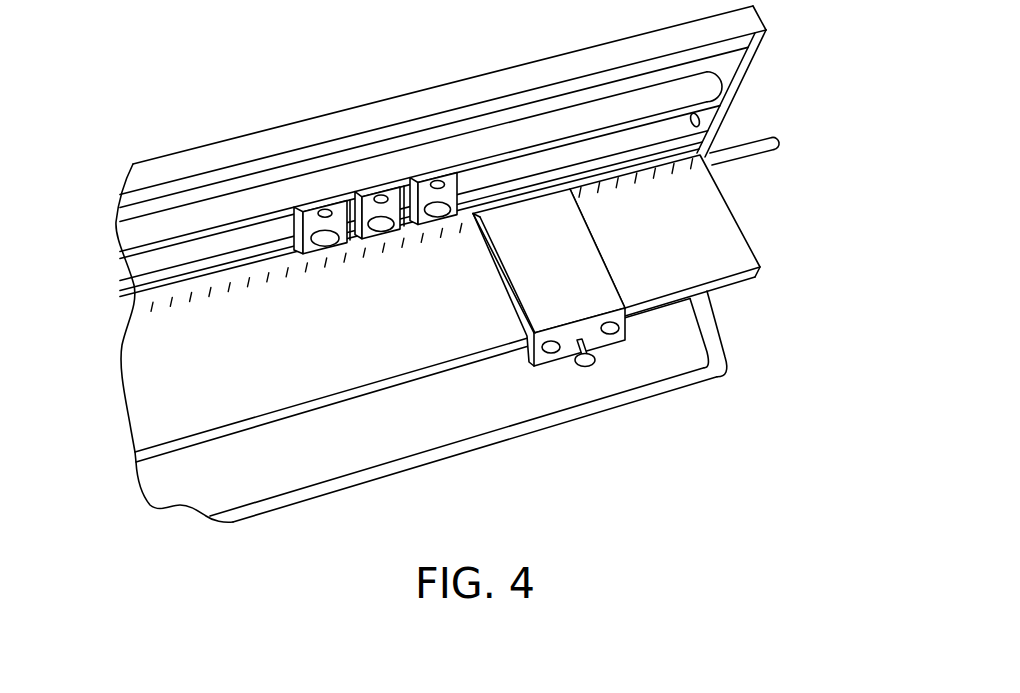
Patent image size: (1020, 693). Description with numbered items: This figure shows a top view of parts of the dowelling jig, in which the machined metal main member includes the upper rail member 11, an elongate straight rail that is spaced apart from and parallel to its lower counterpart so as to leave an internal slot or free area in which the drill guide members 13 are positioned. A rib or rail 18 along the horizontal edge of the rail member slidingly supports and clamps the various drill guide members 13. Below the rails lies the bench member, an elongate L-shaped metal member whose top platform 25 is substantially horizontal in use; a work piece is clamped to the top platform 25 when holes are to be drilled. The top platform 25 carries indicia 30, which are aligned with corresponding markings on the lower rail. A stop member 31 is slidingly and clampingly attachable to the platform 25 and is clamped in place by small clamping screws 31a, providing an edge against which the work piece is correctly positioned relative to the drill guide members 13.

The upper rail member 11 is at (363, 104).
The drill guide members 13 is at (282, 230).
The rib or rail 18 is at (618, 163).
The top platform 25 is at (728, 247).
The indicia 30 is at (262, 283).
The stop member 31 is at (540, 253).
The clamping screws 31a is at (590, 364).